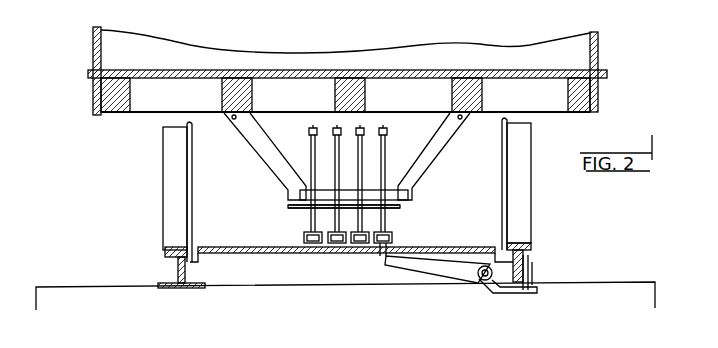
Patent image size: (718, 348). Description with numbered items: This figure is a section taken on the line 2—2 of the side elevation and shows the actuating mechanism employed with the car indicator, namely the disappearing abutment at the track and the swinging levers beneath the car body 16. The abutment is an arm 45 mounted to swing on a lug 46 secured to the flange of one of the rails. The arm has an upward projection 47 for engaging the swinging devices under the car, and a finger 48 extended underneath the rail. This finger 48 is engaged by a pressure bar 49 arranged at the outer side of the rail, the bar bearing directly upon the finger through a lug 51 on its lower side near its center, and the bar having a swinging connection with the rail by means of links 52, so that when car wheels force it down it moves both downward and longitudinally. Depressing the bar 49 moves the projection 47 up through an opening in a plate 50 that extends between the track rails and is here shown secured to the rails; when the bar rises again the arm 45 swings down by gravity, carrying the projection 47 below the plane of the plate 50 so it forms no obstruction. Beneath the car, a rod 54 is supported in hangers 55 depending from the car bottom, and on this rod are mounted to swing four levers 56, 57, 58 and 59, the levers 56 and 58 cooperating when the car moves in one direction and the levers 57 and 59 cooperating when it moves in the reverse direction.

The section line 2— 2 is at (313, 0).
The tank tray 16 is at (607, 42).
The arm 45 is at (460, 272).
The lug 46 is at (485, 283).
The upward projection 47 is at (393, 240).
The finger 48 is at (523, 293).
The pressure bar 49 is at (533, 250).
The plate 50 is at (307, 254).
The lug 51 is at (536, 282).
The links 52 is at (532, 261).
The rod 54 is at (409, 193).
The hangers 55 is at (270, 169).
The lever 56 is at (395, 209).
The lever 57 is at (355, 243).
The lever 58 is at (300, 207).
The lever 59 is at (305, 223).